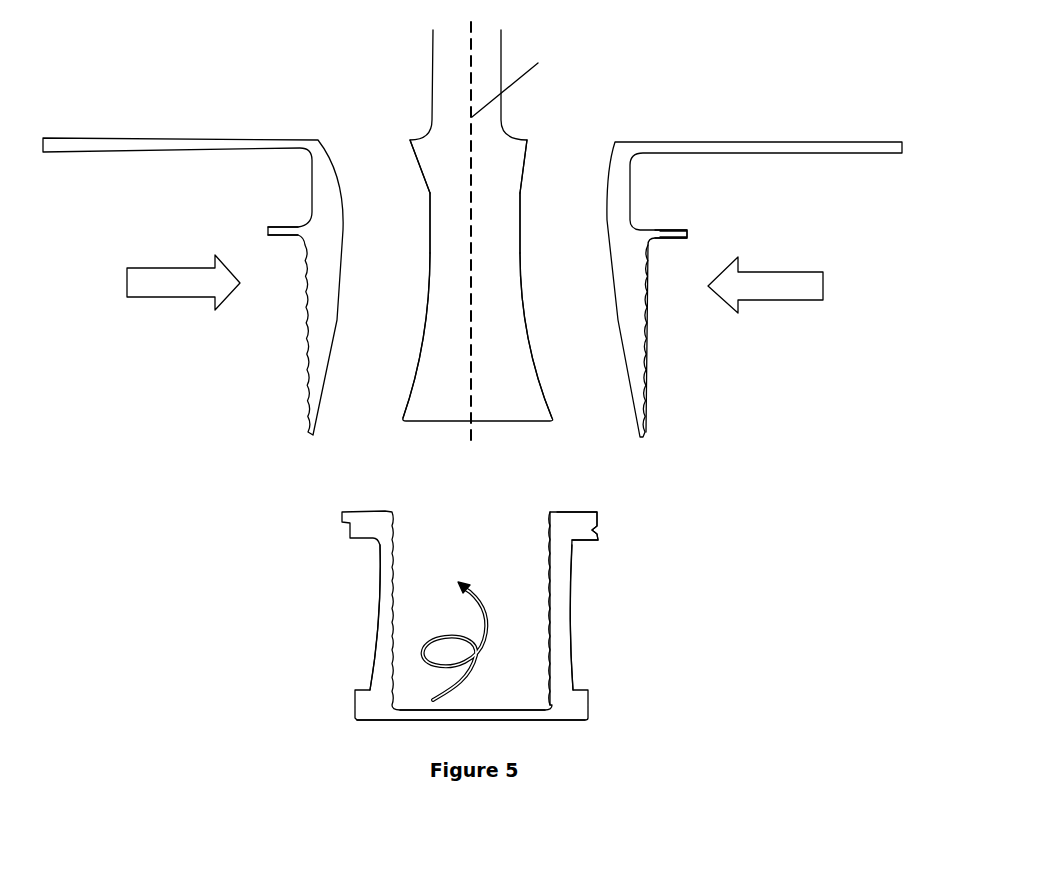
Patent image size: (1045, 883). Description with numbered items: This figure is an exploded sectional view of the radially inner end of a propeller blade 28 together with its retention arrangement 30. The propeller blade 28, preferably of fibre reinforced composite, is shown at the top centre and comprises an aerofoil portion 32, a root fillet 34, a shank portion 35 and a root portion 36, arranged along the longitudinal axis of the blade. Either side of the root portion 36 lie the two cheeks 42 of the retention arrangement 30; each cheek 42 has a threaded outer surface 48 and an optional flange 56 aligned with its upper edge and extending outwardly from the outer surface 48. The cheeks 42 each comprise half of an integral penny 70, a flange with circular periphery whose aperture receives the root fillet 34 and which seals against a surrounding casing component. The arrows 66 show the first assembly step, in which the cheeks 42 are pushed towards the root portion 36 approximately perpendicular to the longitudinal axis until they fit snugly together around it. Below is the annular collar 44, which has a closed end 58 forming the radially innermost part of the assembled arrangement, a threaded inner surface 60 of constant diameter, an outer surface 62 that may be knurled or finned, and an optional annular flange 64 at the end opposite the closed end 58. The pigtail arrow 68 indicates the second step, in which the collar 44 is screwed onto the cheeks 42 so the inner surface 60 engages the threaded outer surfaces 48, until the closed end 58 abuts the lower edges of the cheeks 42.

The propeller blade 28 is at (472, 231).
The retention arrangement 30 is at (270, 493).
The aerofoil portion 32 is at (441, 84).
The root fillet 34 is at (441, 154).
The shank portion 35 is at (441, 194).
The root portion 36 is at (435, 358).
The cheek 42 is at (270, 207).
The collar 44 is at (557, 603).
The threaded outer surface 48 is at (648, 335).
The flange 56 is at (660, 233).
The closed end 58 is at (492, 717).
The inner surface 60 is at (563, 555).
The outer surface 62 is at (385, 652).
The annular flange 64 is at (588, 513).
The arrows 66 is at (200, 295).
The pigtail arrow 68 is at (458, 637).
The integral penny 70 is at (755, 142).